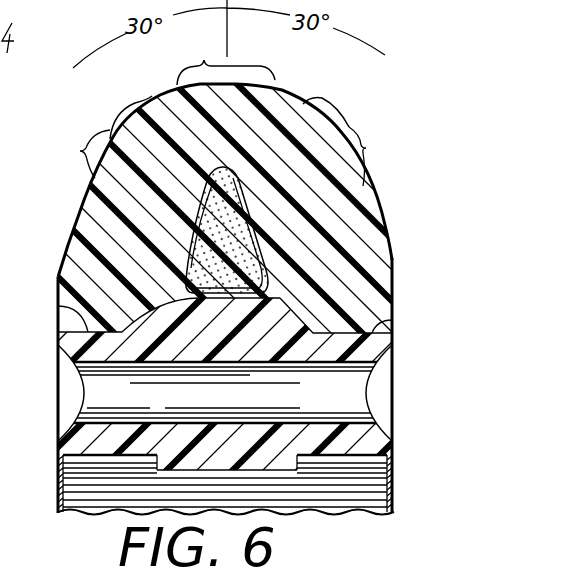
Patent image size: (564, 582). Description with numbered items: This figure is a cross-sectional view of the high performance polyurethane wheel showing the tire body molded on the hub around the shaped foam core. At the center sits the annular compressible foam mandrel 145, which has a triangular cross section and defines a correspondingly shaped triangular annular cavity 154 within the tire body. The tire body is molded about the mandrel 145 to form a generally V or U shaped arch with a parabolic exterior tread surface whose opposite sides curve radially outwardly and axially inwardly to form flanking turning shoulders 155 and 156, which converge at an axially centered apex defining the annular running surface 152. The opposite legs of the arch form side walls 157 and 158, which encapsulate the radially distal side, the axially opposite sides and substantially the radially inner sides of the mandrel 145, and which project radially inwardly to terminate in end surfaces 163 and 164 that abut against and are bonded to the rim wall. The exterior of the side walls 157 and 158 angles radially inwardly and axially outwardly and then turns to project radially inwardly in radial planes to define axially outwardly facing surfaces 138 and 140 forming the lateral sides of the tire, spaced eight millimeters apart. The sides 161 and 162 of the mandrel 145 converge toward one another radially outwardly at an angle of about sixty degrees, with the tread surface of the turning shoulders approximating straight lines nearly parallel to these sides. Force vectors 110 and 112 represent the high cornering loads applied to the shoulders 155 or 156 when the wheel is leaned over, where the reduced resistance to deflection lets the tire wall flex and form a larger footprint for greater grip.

The force vector 110 is at (345, 127).
The force vector 112 is at (110, 127).
The axially outwardly facing surface 138 is at (392, 302).
The axially outwardly facing surface 140 is at (58, 278).
The compressible foam mandrel 145 is at (186, 238).
The running surface 152 is at (223, 60).
The annular cavity 154 is at (264, 257).
The turning shoulder 155 is at (360, 142).
The turning shoulder 156 is at (95, 137).
The side wall 157 is at (385, 233).
The side wall 158 is at (72, 228).
The side of the mandrel 161 is at (197, 225).
The side of the mandrel 162 is at (250, 207).
The end surface 163 is at (392, 328).
The end surface 164 is at (78, 322).